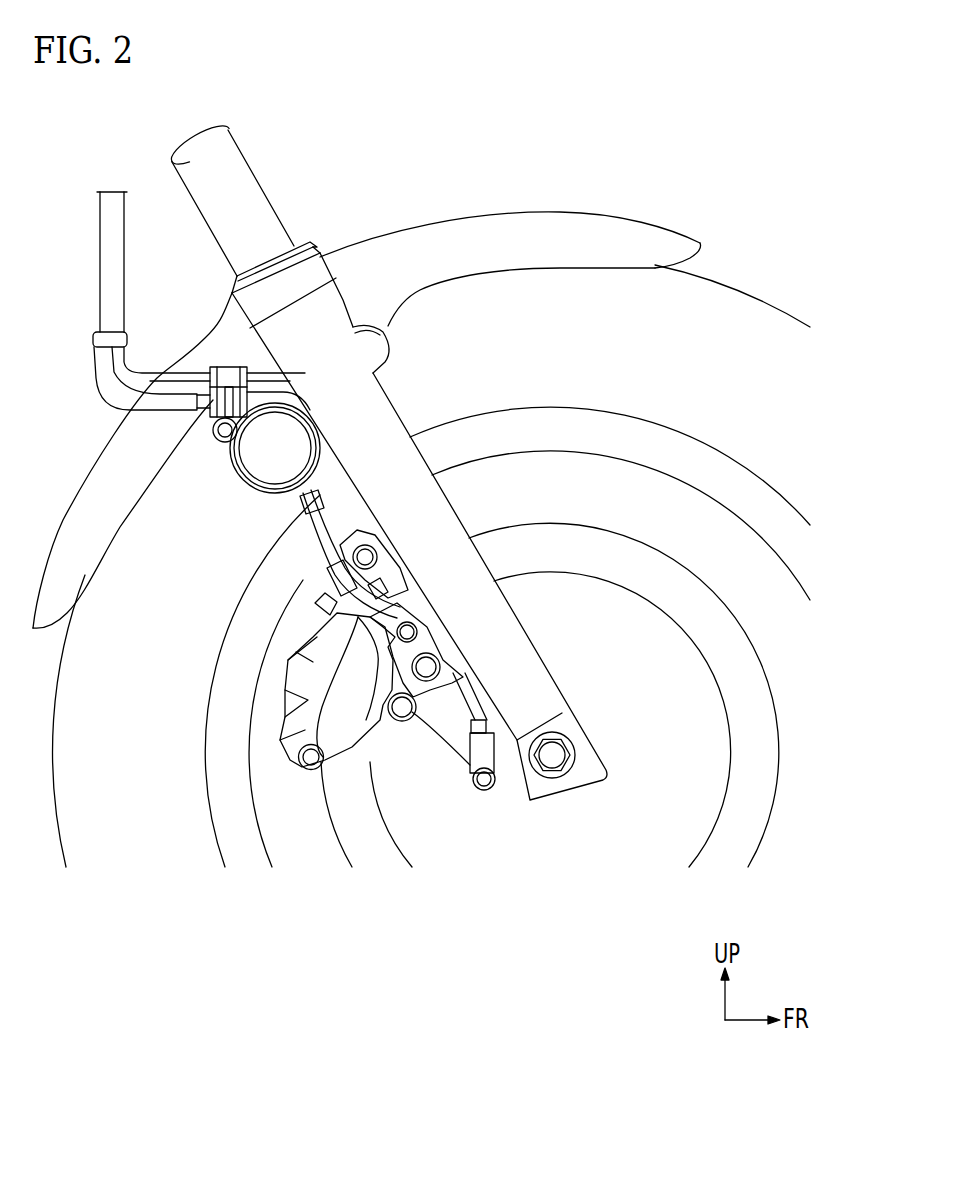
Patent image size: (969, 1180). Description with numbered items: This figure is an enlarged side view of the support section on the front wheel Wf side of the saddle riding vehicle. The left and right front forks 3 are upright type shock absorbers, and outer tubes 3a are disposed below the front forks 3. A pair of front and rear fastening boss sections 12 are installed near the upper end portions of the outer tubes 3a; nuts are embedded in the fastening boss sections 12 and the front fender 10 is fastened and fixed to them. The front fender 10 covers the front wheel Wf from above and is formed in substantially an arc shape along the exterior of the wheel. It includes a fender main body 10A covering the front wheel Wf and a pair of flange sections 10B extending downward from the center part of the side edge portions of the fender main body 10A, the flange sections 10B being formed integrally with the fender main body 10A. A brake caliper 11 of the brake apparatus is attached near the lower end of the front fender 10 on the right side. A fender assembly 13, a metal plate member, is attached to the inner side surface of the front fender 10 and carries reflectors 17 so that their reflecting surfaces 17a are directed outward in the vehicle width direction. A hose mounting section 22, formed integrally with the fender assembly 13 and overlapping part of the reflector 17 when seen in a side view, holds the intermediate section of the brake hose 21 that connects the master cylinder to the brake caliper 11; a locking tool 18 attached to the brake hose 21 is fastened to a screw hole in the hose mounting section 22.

The front wheel Wf is at (80, 803).
The front fork 3 is at (388, 423).
The outer tube 3a is at (430, 500).
The front fender 10 is at (425, 217).
The fender main body 10A is at (110, 458).
The flange section 10B is at (383, 326).
The brake caliper 11 is at (337, 733).
The fastening boss section 12 is at (370, 340).
The fender assembly 13 is at (267, 503).
The reflector 17 is at (230, 468).
The reflecting surface 17a is at (263, 468).
The locking tool 18 is at (217, 372).
The brake hose 21 is at (162, 400).
The hose mounting section 22 is at (208, 433).